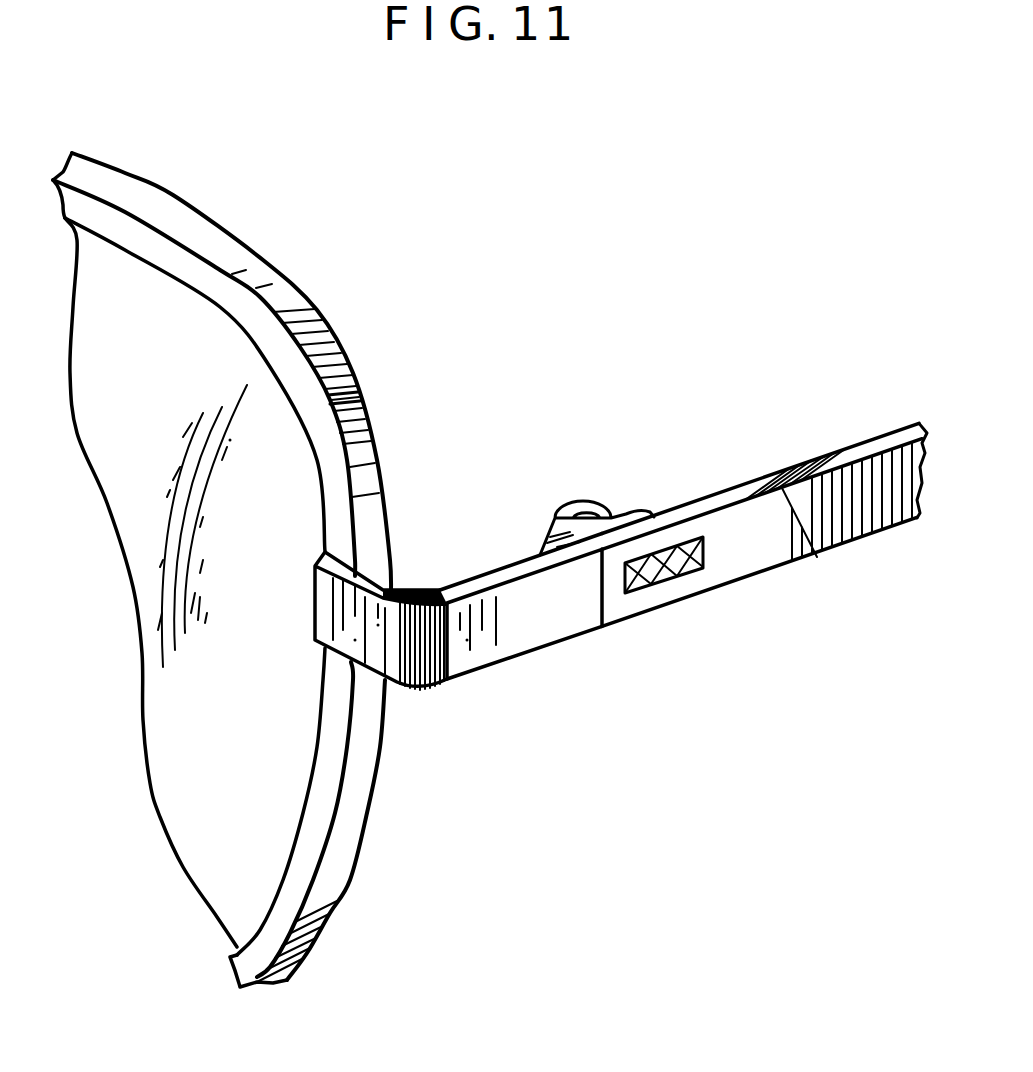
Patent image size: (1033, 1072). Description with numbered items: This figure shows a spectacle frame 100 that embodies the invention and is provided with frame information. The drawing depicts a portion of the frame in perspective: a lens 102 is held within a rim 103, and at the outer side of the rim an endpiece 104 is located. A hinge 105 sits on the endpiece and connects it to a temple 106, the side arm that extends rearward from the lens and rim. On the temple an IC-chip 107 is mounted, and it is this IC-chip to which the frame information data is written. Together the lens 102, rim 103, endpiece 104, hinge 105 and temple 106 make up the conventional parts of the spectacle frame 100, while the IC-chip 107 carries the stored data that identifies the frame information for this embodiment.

The spectacle frame 100 is at (633, 274).
The lens 102 is at (175, 817).
The rim 103 is at (310, 313).
The endpiece 104 is at (453, 677).
The hinge 105 is at (593, 500).
The temple 106 is at (782, 543).
The IC-chip 107 is at (672, 553).